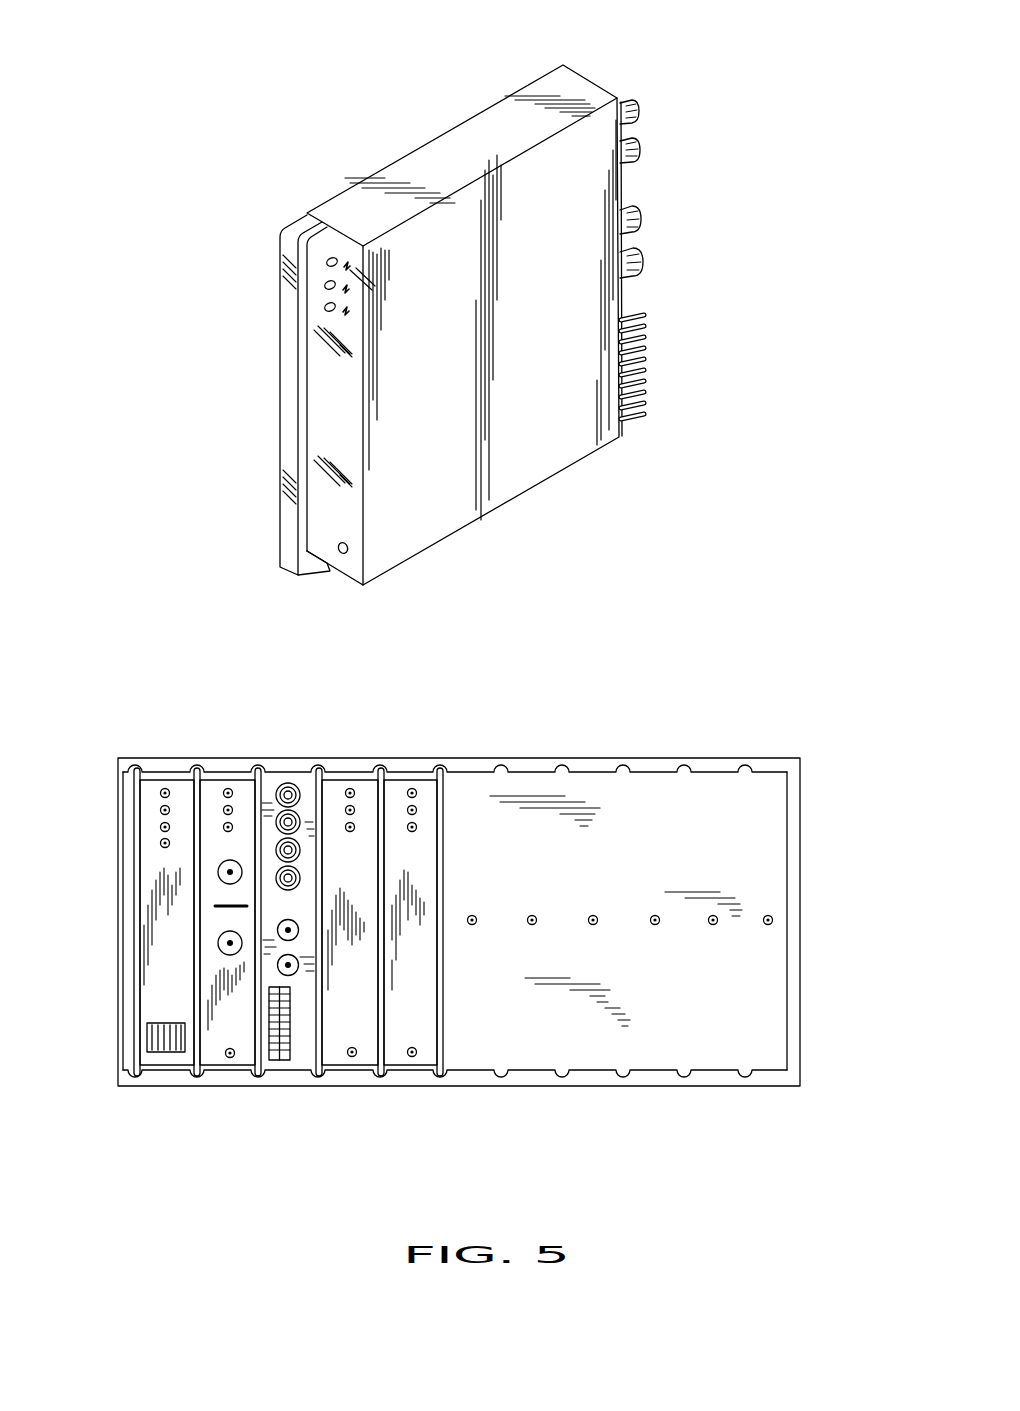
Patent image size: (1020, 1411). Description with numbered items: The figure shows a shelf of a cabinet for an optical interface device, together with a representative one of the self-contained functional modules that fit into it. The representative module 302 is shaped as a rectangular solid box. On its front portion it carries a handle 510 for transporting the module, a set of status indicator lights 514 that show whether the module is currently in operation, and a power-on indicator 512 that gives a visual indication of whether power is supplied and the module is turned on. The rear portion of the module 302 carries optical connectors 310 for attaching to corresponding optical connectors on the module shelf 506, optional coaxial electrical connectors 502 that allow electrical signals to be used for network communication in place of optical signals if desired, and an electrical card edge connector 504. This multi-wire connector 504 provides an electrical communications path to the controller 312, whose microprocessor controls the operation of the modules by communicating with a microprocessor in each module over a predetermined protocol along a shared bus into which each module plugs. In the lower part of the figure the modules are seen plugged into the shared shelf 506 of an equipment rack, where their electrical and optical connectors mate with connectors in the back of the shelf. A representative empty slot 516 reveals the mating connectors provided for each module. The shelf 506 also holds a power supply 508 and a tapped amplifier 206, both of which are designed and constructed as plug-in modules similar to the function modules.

The module 302 is at (530, 88).
The optical connectors 310 is at (655, 111).
The coaxial electrical connectors 502 is at (656, 229).
The electrical card edge connector 504 is at (657, 388).
The module shelf 506 is at (640, 1094).
The power supply 508 is at (148, 826).
The handle 510 is at (272, 382).
The power-on indicator 512 is at (325, 572).
The status indicator lights 514 is at (312, 298).
The empty slot 516 is at (300, 1052).
The controller 312 is at (337, 783).
The tapped amplifier 206 is at (217, 1050).